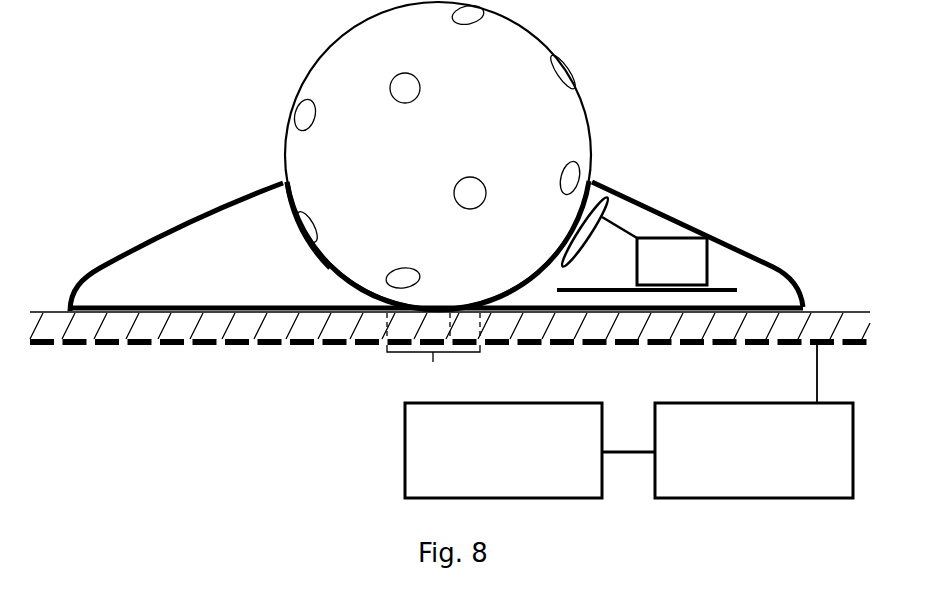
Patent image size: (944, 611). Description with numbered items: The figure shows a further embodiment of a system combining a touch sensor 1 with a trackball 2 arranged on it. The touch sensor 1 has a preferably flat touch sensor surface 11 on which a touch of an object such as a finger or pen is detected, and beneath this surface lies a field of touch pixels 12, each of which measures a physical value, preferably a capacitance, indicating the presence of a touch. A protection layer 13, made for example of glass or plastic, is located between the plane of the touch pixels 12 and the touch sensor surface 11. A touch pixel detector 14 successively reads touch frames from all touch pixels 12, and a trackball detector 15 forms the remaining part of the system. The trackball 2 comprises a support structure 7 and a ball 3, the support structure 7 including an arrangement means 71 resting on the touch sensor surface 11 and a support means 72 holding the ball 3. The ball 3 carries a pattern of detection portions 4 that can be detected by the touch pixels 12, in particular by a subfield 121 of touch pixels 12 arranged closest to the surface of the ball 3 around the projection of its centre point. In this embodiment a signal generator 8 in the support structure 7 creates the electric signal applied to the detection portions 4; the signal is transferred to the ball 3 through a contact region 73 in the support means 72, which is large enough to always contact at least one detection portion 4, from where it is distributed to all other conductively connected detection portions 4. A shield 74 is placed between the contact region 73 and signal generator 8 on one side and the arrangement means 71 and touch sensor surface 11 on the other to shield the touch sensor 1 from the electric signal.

The touch sensor 1 is at (163, 380).
The trackball 2 is at (212, 140).
The ball 3 is at (537, 35).
The detection portions 4 is at (557, 72).
The support structure 7 is at (668, 215).
The signal generator 8 is at (672, 261).
The touch sensor surface 11 is at (52, 303).
The touch pixels 12 is at (267, 340).
The protection layer 13 is at (82, 323).
The touch pixel detector 14 is at (754, 450).
The trackball detector 15 is at (503, 450).
The arrangement means 71 is at (110, 310).
The support means 72 is at (292, 230).
The contact region 73 is at (583, 238).
The shield 74 is at (723, 288).
The subfield of touch pixels 121 is at (433, 354).